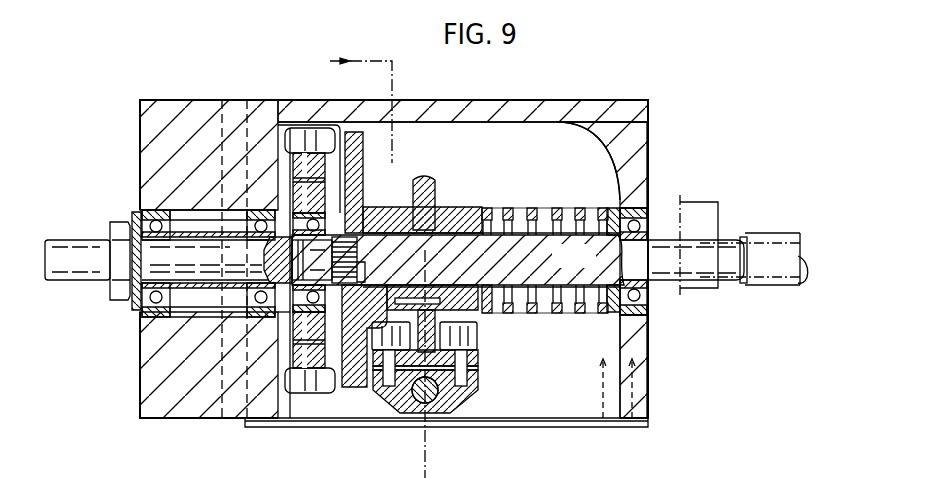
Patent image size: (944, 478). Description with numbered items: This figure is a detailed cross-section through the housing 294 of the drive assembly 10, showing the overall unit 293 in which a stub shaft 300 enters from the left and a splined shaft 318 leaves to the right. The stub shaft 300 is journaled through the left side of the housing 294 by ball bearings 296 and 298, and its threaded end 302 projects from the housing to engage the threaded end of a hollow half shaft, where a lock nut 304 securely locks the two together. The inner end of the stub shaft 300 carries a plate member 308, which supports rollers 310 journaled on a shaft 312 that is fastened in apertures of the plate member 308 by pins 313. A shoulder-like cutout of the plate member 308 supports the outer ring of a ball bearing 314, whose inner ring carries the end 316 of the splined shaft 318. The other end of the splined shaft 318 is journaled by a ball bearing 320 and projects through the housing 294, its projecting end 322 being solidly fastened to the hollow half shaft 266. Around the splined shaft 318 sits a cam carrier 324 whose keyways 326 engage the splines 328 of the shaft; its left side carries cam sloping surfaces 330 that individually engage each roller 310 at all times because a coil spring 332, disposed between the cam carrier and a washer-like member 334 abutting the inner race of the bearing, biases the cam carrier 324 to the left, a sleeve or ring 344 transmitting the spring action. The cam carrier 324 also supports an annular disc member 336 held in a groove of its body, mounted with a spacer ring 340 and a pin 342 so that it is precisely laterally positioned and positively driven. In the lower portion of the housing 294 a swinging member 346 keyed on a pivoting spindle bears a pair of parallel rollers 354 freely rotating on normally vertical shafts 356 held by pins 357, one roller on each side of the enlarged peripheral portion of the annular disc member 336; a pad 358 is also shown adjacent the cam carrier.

The drive assembly 10 is at (351, 108).
The hollow half shaft 266 is at (776, 233).
The housing 293 is at (190, 420).
The housing 294 is at (565, 122).
The ball bearing 296 is at (146, 312).
The ball bearing 298 is at (222, 326).
The stub shaft 300 is at (172, 245).
The threaded end 302 is at (62, 268).
The lock nut 304 is at (120, 232).
The plate member 308 is at (282, 338).
The rollers 310 is at (283, 392).
The shaft 312 is at (310, 394).
The pins 313 is at (293, 176).
The ball bearing 314 is at (337, 301).
The end of splined shaft 316 is at (331, 260).
The splined shaft 318 is at (594, 268).
The ball bearing 320 is at (650, 216).
The projecting end 322 is at (713, 262).
The cam carrier 324 is at (363, 150).
The keyways 326 is at (370, 233).
The splines 328 is at (368, 275).
The cam sloping surfaces 330 is at (340, 128).
The coil spring 332 is at (512, 210).
The washer-like member 334 is at (613, 208).
The annular disc member 336 is at (437, 207).
The spacer ring 340 is at (424, 300).
The pin 342 is at (443, 292).
The sleeve or ring 344 is at (484, 300).
The swinging member 346 is at (476, 384).
The rollers 354 is at (372, 358).
The shafts 356 is at (400, 414).
The pins 357 is at (478, 368).
The pad 358 is at (432, 180).